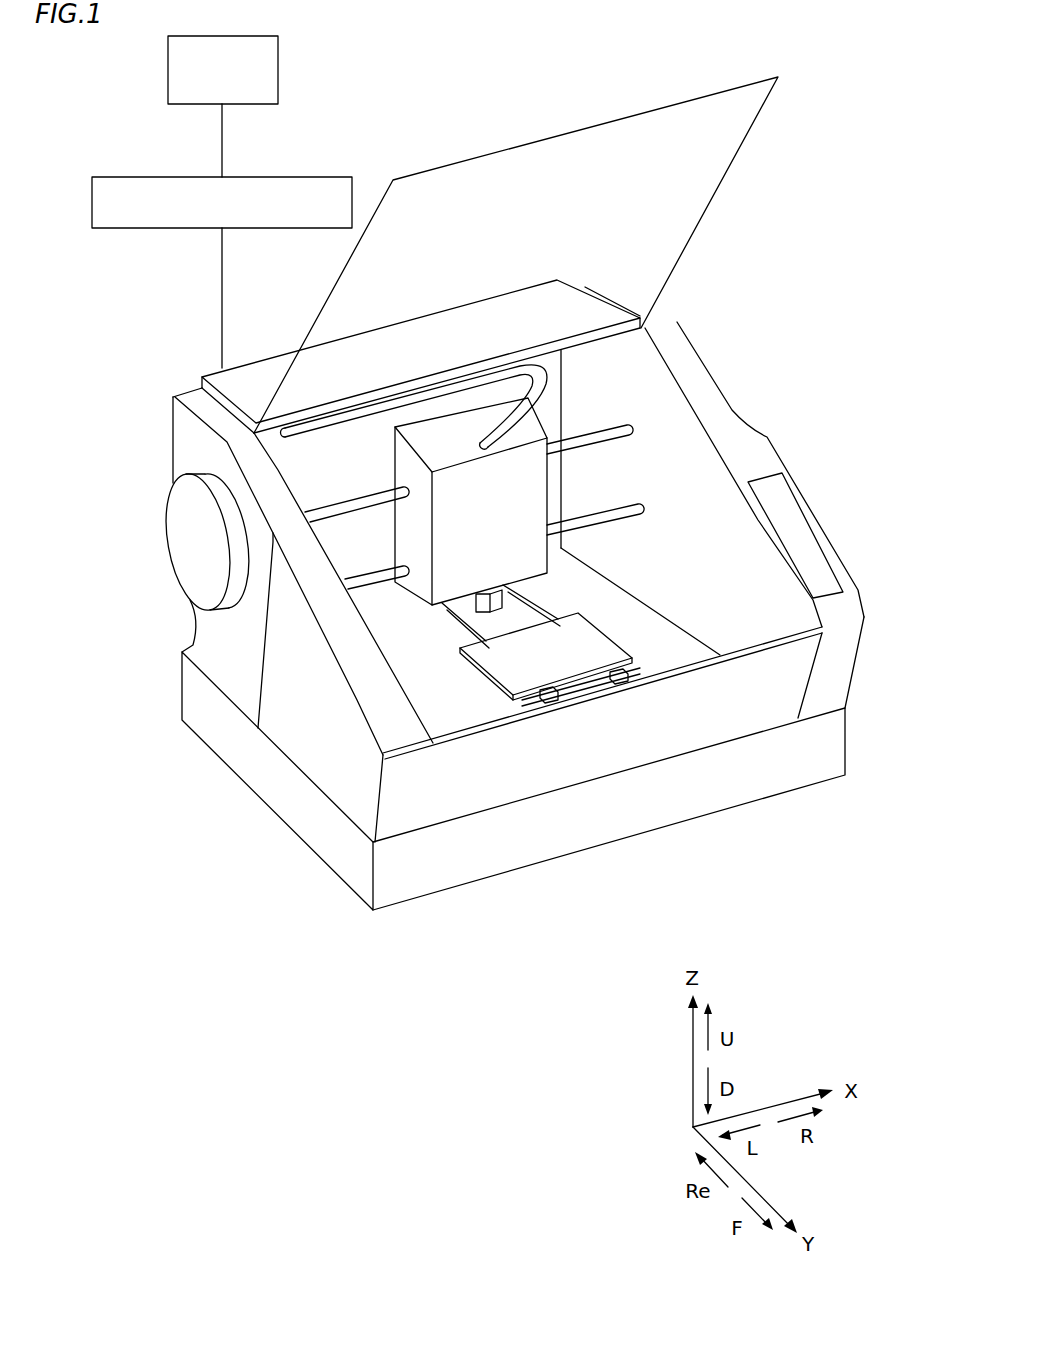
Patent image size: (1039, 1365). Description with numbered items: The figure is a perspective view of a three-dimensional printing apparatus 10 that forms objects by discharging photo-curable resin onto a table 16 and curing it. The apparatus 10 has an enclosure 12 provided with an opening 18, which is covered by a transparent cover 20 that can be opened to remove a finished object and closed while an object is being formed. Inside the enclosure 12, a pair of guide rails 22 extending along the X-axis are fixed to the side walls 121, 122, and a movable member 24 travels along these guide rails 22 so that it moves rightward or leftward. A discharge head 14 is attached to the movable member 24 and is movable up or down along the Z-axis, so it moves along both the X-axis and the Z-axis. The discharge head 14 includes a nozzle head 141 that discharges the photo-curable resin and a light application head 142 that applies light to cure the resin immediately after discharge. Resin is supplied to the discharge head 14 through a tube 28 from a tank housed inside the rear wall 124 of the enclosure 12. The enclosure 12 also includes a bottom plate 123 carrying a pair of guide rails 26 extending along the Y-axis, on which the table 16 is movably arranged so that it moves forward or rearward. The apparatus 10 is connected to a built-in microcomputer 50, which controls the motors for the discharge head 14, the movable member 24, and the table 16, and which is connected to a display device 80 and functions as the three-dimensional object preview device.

The three-dimensional printing apparatus 10 is at (802, 232).
The enclosure 12 is at (724, 388).
The discharge head 14 is at (430, 594).
The table 16 is at (528, 710).
The opening 18 is at (780, 608).
The cover 20 is at (592, 146).
The guide rails 22 is at (642, 511).
The movable member 24 is at (400, 463).
The guide rails 26 is at (548, 700).
The tube 28 is at (283, 453).
The microcomputer 50 is at (280, 177).
The display device 80 is at (280, 66).
The side wall 121 is at (470, 620).
The side wall 122 is at (752, 528).
The bottom plate 123 is at (440, 650).
The rear wall 124 is at (303, 470).
The nozzle head 141 is at (533, 593).
The light application head 142 is at (452, 652).